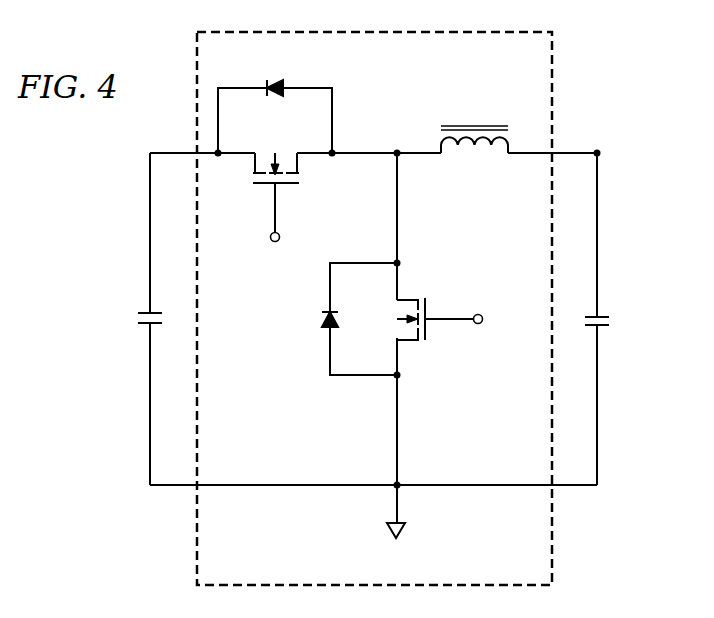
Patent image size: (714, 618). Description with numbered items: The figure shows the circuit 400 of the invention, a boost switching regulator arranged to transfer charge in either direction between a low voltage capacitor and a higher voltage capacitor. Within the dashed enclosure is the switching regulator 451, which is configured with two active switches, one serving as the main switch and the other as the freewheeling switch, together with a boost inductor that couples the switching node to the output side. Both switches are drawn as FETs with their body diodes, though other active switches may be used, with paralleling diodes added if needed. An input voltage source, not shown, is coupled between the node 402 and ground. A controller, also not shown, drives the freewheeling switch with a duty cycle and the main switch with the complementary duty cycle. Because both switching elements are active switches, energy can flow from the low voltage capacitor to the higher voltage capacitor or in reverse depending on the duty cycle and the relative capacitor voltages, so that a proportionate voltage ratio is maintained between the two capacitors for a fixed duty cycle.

The circuit 400 is at (606, 66).
The node 402 is at (600, 151).
The switching regulator 451 is at (552, 518).